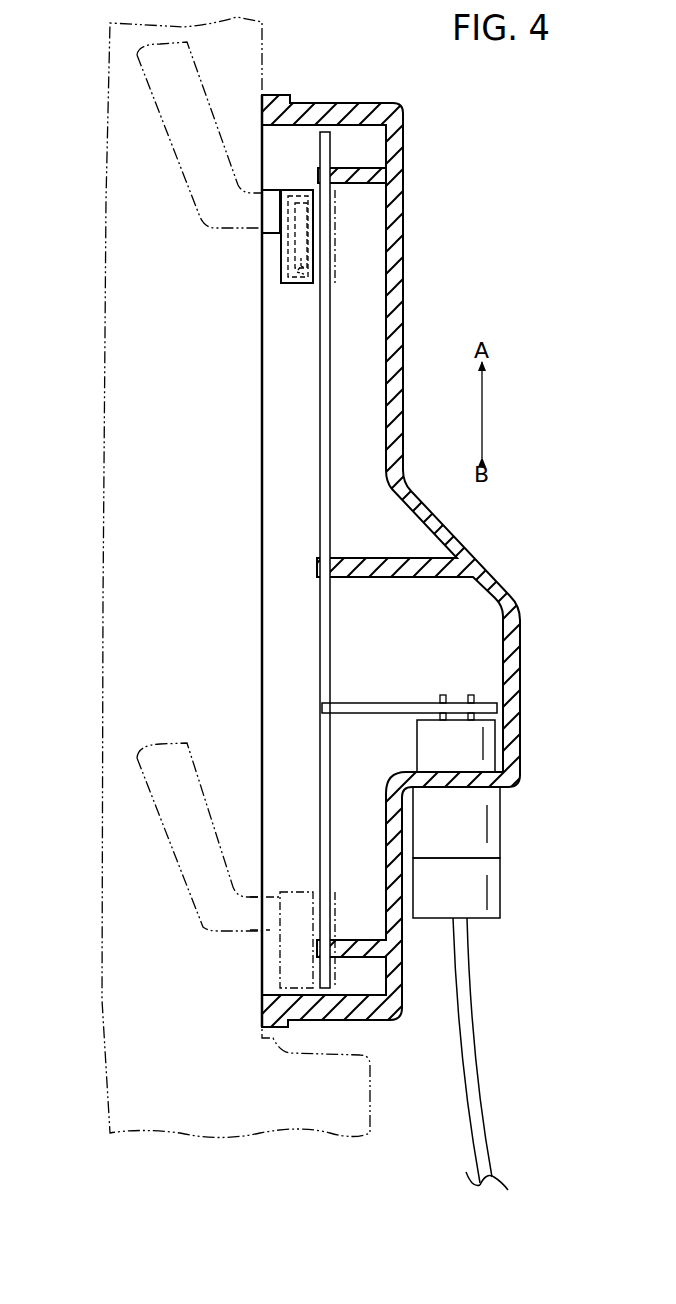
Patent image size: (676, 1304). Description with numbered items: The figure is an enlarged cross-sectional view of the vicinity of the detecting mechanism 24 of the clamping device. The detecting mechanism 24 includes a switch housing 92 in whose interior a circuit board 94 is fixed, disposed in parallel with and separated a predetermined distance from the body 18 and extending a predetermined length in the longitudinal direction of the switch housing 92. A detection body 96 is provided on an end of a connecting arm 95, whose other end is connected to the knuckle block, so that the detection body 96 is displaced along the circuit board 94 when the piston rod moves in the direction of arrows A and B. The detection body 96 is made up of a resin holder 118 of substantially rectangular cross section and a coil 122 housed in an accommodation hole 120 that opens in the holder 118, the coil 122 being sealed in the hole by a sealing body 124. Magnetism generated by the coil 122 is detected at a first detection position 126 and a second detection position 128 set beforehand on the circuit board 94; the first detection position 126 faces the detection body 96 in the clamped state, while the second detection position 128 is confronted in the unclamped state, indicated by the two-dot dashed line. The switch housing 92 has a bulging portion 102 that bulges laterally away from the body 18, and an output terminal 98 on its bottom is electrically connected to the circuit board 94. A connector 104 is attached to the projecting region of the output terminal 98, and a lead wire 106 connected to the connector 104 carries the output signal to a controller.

The body 18 is at (265, 50).
The detecting mechanism 24 is at (430, 146).
The switch housing 92 is at (393, 326).
The circuit board 94 is at (331, 645).
The connecting arm 95 is at (187, 150).
The detection body 96 is at (282, 285).
The output terminal 98 is at (494, 827).
The bulging portion 102 is at (512, 657).
The connector 104 is at (494, 885).
The lead wire 106 is at (463, 1011).
The holder 118 is at (296, 189).
The accommodation hole 120 is at (300, 256).
The coil 122 is at (300, 236).
The sealing body 124 is at (285, 252).
The first detection position 126 is at (337, 203).
The second detection position 128 is at (335, 923).